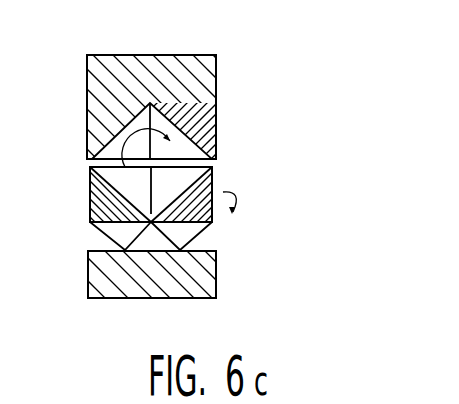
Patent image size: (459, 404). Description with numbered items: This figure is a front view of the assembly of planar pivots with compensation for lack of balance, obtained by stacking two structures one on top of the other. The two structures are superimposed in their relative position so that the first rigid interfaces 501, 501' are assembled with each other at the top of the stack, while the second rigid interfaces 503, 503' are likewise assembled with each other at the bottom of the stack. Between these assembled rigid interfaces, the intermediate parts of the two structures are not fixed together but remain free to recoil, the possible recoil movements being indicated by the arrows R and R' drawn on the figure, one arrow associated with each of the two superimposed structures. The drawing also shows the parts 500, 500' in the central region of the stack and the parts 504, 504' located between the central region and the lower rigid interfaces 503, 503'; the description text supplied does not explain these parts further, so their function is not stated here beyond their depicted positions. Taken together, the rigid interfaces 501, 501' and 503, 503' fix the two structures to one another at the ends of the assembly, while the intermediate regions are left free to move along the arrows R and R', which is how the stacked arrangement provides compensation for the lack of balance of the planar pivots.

The first rigid interface 501 is at (229, 202).
The first rigid interface 501' is at (185, 202).
The middle block 500 is at (229, 243).
The middle block hatched section 500' is at (213, 202).
The arrow R is at (263, 195).
The arrow R' is at (105, 161).
The V-shaped support 504 is at (232, 228).
The V-shaped support 504' is at (77, 243).
The second rigid interface 503 is at (200, 274).
The second rigid interface 503' is at (229, 225).